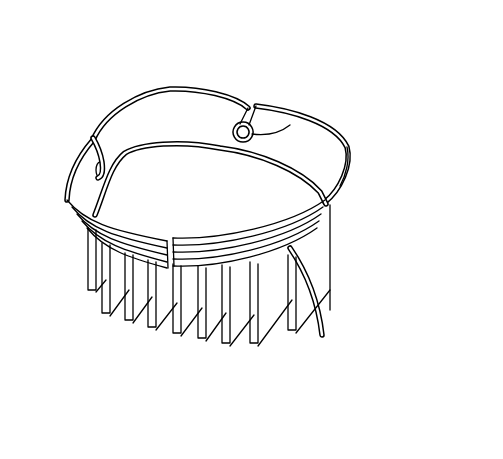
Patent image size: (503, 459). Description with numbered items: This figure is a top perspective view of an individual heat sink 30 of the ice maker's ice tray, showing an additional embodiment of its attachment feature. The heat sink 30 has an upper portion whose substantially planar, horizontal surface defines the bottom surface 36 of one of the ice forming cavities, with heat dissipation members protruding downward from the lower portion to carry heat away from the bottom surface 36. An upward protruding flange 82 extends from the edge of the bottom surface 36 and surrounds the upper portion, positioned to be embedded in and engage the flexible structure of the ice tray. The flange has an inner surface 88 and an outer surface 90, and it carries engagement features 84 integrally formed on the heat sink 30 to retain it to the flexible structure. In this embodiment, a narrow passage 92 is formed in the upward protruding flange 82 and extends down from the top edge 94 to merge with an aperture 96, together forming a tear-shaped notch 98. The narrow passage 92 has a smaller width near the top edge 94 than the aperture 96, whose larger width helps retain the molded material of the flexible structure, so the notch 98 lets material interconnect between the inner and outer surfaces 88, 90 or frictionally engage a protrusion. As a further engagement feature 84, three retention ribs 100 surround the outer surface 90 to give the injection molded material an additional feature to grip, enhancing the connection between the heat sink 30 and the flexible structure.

The heat sink 30 is at (150, 60).
The bottom surface 36 is at (217, 192).
The upward protruding flange 82 is at (131, 130).
The engagement feature 84 is at (86, 142).
The inner surface 88 is at (328, 158).
The outer surface 90 is at (343, 188).
The narrow passage 92 is at (262, 105).
The top edge 94 is at (350, 135).
The aperture 96 is at (290, 125).
The tear-shaped notch 98 is at (104, 146).
The retention ribs 100 is at (322, 300).